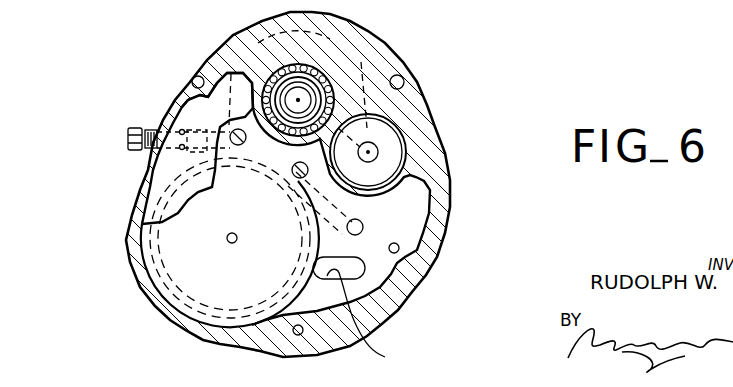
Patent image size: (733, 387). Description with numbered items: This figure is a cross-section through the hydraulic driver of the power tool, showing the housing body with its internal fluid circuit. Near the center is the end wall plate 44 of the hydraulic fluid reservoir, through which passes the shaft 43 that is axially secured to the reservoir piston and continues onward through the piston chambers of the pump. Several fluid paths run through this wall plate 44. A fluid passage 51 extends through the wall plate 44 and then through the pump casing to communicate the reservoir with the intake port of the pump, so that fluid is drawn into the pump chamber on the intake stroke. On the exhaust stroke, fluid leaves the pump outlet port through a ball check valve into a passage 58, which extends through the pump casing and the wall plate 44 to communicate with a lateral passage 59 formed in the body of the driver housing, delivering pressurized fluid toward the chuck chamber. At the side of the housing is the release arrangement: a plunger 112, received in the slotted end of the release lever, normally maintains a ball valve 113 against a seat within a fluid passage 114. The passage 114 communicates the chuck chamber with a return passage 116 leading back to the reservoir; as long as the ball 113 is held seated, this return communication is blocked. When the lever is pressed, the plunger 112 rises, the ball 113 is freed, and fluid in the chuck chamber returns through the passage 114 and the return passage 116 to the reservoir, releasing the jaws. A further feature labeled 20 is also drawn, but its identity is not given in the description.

The housing slot 20 is at (357, 268).
The shaft 43 is at (238, 236).
The end wall plate 44 is at (206, 262).
The fluid passage 51 is at (385, 357).
The passage 58 is at (362, 211).
The lateral passage 59 is at (293, 177).
The plunger 112 is at (128, 137).
The ball valve 113 is at (215, 125).
The fluid passage 114 is at (185, 97).
The return passage 116 is at (195, 158).